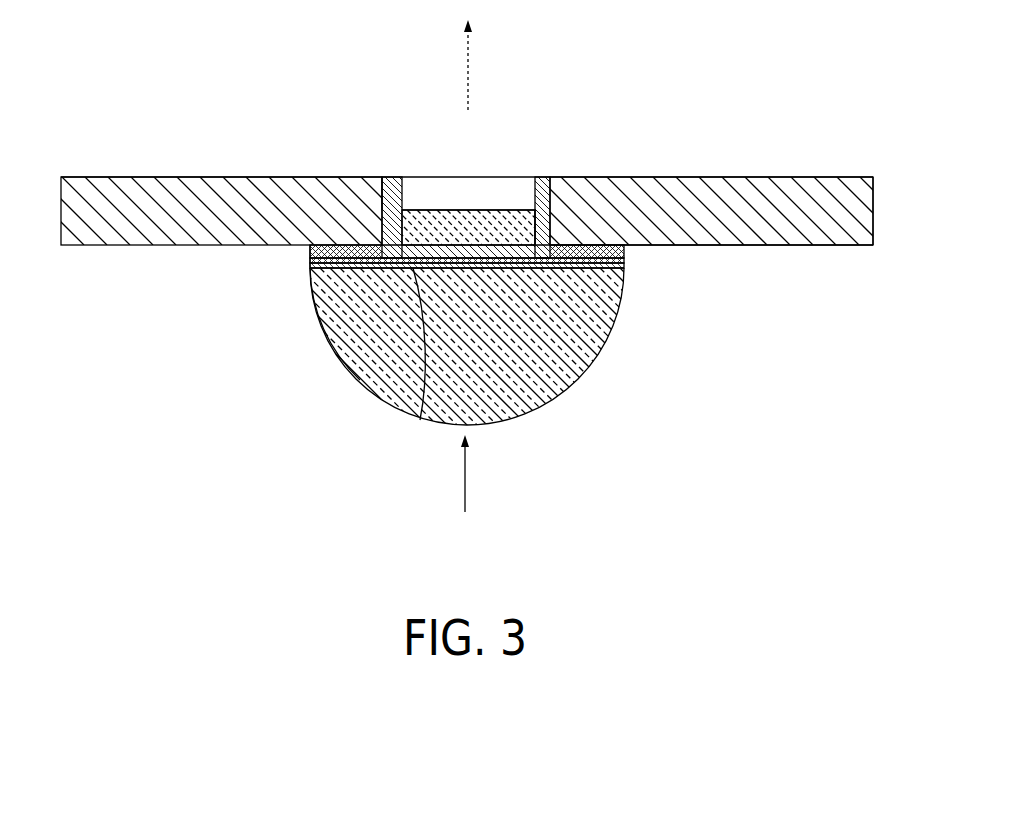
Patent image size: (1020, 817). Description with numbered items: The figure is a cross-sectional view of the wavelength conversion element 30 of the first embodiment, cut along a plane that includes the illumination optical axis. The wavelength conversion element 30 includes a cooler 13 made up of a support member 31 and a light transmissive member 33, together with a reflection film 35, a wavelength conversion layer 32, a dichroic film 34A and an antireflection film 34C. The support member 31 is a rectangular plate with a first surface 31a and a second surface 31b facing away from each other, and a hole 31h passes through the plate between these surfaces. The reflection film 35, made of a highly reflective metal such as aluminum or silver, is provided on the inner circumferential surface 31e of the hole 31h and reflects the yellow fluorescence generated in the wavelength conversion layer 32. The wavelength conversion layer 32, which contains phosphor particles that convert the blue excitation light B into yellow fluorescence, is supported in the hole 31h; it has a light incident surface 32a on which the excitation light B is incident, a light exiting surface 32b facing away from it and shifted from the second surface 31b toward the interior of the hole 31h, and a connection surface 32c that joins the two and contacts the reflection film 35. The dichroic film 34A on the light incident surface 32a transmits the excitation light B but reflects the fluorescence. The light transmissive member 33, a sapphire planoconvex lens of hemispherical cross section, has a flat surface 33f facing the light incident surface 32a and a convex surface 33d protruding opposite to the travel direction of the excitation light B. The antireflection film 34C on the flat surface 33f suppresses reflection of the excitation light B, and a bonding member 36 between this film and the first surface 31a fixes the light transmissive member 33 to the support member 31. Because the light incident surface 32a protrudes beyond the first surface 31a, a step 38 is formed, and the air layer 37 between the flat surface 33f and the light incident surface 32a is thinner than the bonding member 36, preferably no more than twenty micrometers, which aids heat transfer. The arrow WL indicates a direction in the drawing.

The wavelength conversion element 30 is at (265, 118).
The cooler 13 is at (187, 177).
The support member 31 is at (740, 190).
The first surface 31a is at (835, 246).
The second surface 31b is at (835, 178).
The inner circumferential surface 31e is at (391, 177).
The hole 31h is at (417, 170).
The wavelength conversion layer 32 is at (492, 210).
The light incident surface 32a is at (420, 420).
The light exiting surface 32b is at (447, 210).
The connection surface 32c is at (547, 207).
The light transmissive member 33 is at (372, 385).
The convex surface 33d is at (333, 357).
The flat surface 33f is at (626, 262).
The dichroic film 34A is at (353, 176).
The antireflection film 34C is at (307, 270).
The reflection film 35 is at (540, 177).
The bonding member 36 is at (308, 251).
The air layer 37 is at (525, 250).
The step 38 is at (550, 250).
The wiring direction WL is at (468, 72).
The excitation light B is at (467, 488).